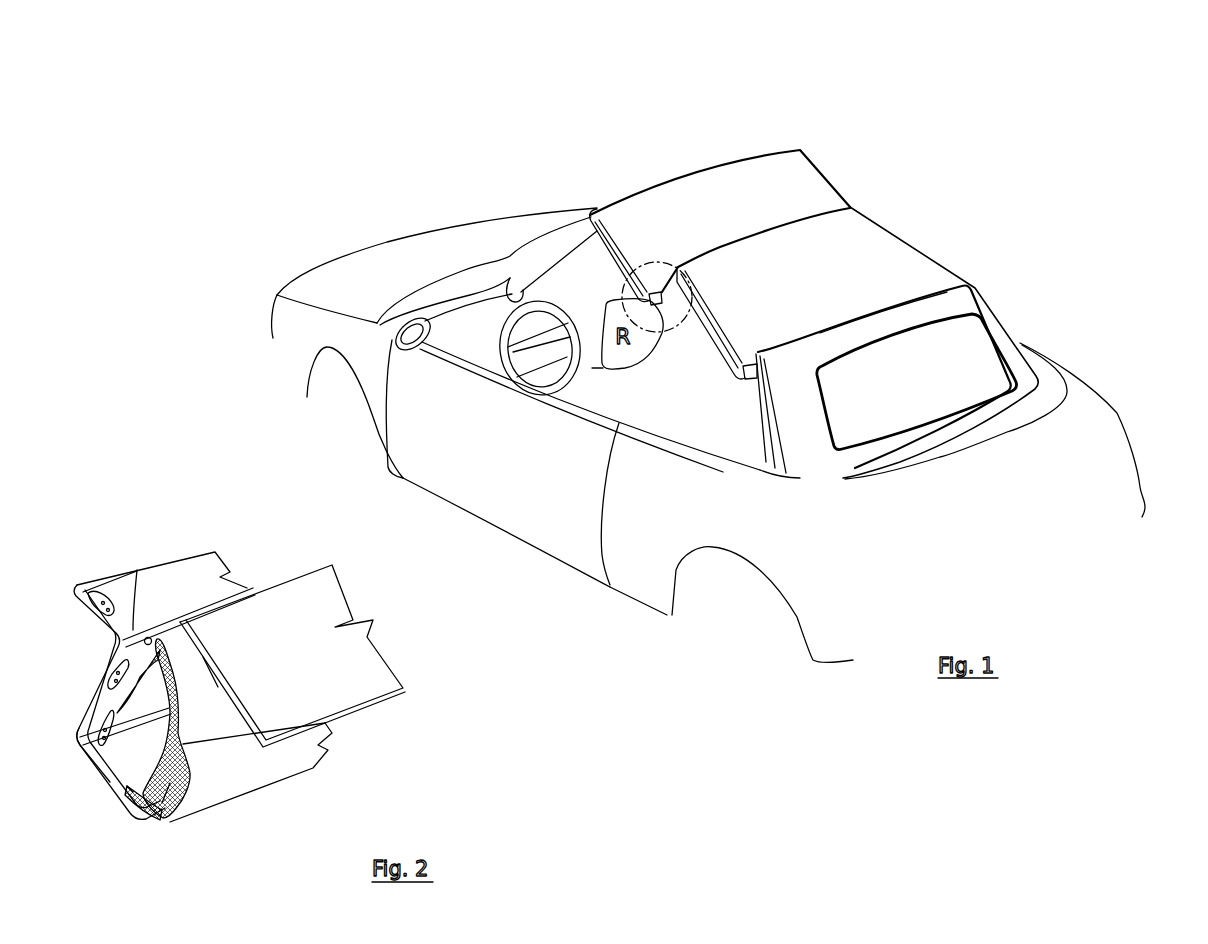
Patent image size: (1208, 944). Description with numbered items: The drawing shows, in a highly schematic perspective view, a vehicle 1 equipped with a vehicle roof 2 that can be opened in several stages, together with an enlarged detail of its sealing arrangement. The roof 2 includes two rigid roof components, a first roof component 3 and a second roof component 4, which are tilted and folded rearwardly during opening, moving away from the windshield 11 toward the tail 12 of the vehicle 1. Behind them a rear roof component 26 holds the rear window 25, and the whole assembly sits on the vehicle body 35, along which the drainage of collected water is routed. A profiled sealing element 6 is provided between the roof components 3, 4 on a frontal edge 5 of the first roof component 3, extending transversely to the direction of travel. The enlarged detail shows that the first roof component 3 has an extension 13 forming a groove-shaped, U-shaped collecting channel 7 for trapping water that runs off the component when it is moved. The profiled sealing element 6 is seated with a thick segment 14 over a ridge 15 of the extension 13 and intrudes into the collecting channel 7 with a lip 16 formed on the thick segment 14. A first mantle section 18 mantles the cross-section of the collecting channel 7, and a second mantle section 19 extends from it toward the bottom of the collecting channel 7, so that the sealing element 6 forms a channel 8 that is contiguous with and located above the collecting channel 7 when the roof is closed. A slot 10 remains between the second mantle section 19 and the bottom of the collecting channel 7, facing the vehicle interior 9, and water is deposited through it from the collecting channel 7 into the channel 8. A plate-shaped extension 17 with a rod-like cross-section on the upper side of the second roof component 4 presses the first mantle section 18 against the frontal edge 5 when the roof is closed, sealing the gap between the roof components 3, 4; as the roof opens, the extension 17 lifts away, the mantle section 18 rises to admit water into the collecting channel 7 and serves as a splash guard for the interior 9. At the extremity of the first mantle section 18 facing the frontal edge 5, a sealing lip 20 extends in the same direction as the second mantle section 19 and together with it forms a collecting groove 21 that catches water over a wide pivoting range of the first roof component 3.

In FIG. 1, the vehicle 1 is at (1015, 167).
In FIG. 1, the vehicle roof 2 is at (838, 284).
In FIG. 1, the first roof component 3 is at (797, 189).
In FIG. 2, the first roof component 3 is at (122, 595).
In FIG. 1, the second roof component 4 is at (891, 273).
In FIG. 1, the frontal edge 5 is at (648, 306).
In FIG. 2, the frontal edge 5 is at (132, 662).
In FIG. 1, the profiled sealing element 6 is at (663, 282).
In FIG. 2, the profiled sealing element 6 is at (237, 803).
In FIG. 2, the collecting channel 7 is at (105, 698).
In FIG. 2, the channel 8 is at (143, 751).
In FIG. 1, the vehicle interior 9 is at (689, 399).
In FIG. 2, the slot 10 is at (117, 752).
In FIG. 1, the windshield 11 is at (505, 250).
In FIG. 1, the tail 12 is at (1068, 432).
In FIG. 2, the extension 13 is at (110, 782).
In FIG. 2, the thick segment 14 is at (182, 765).
In FIG. 2, the ridge 15 is at (163, 795).
In FIG. 2, the lip 16 is at (133, 793).
In FIG. 1, the plate-shaped extension 17 is at (868, 211).
In FIG. 2, the plate-shaped extension 17 is at (363, 680).
In FIG. 2, the first mantle section 18 is at (177, 712).
In FIG. 2, the second mantle section 19 is at (132, 660).
In FIG. 2, the sealing lip 20 is at (150, 656).
In FIG. 2, the collecting groove 21 is at (130, 692).
In FIG. 1, the rear window 25 is at (965, 355).
In FIG. 1, the rear roof component 26 is at (941, 314).
In FIG. 1, the vehicle body 35 is at (782, 530).